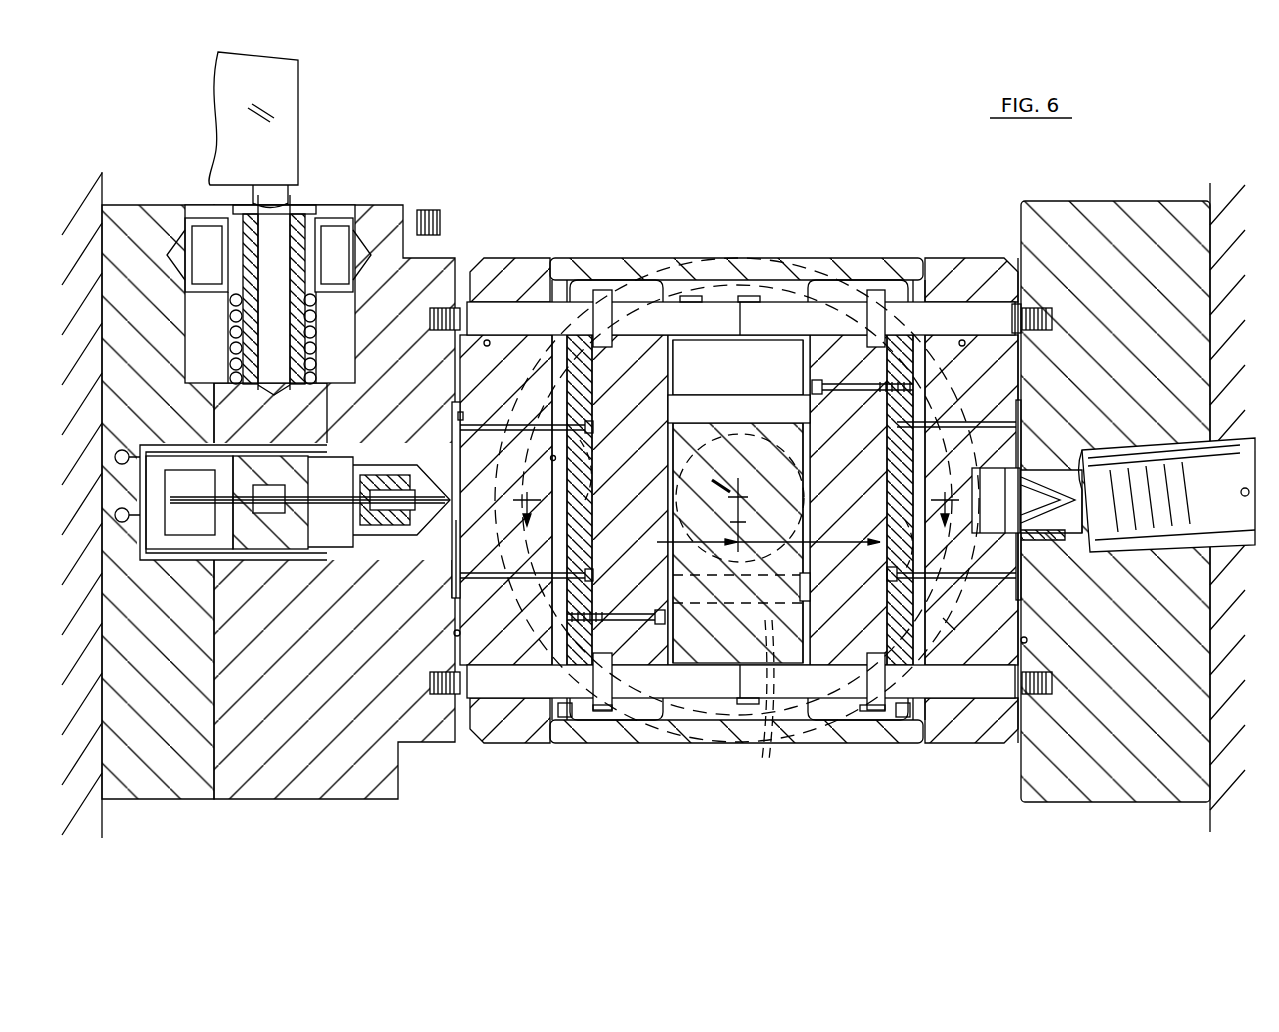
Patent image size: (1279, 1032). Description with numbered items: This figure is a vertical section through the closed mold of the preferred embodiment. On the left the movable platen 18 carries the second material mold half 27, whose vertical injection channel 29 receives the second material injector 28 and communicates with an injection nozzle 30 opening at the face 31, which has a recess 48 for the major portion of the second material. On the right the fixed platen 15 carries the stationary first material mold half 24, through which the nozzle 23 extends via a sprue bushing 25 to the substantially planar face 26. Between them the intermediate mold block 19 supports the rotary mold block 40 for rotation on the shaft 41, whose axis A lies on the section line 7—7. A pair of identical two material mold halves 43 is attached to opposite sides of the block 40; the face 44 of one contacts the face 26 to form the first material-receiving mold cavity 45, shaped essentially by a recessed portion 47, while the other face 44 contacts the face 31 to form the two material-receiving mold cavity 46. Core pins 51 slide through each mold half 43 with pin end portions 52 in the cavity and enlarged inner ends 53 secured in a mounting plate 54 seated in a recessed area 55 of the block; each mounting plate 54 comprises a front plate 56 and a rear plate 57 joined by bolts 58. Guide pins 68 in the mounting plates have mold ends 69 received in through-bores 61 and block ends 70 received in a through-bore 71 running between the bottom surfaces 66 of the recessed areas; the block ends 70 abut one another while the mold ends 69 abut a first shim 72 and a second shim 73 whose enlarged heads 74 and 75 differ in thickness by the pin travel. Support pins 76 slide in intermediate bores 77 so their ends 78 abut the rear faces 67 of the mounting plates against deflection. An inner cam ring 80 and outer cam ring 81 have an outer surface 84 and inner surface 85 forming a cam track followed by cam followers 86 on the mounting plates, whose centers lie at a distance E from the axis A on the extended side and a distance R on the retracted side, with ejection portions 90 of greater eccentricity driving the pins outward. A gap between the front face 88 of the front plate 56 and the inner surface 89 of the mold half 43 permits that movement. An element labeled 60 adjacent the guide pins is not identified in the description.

The section line 7 is at (735, 509).
The fixed platen 15 is at (1225, 168).
The movable platen 18 is at (80, 822).
The intermediate mold block 19 is at (813, 240).
The nozzle 23 is at (1225, 545).
The first material mold half 24 is at (1120, 800).
The sprue bushing 25 is at (1055, 470).
The face of first material mold half 26 is at (1028, 641).
The second material mold half 27 is at (306, 801).
The second material injector 28 is at (292, 100).
The vertical injection channel 29 is at (268, 342).
The injection nozzle 30 is at (262, 552).
The face of second material mold half 31 is at (452, 633).
The rotary mold block 40 is at (714, 256).
The shaft 41 is at (592, 410).
The two material mold halves 43 is at (495, 268).
The face of two material mold half 44 is at (455, 655).
The first material-receiving mold cavity 45 is at (1022, 586).
The two material-receiving mold cavity 46 is at (450, 568).
The recessed portion 47 is at (460, 415).
The recess 48 is at (455, 416).
The core pins 51 is at (488, 432).
The pin end portions 52 is at (462, 575).
The inner ends 53 is at (888, 576).
The mounting plate 54 is at (655, 718).
The recessed area 55 is at (618, 722).
The front plate 56 is at (575, 712).
The rear plate 57 is at (602, 712).
The bolts 58 is at (830, 380).
The rail brackets 60 is at (603, 295).
The through-bore 61 is at (487, 346).
The bottom surfaces 66 is at (803, 494).
The rear faces 67 is at (728, 455).
The guide pins 68 is at (755, 300).
The mold end 69 is at (530, 300).
The block end 70 is at (657, 330).
The through-bore 71 is at (692, 296).
The first shim 72 is at (1022, 300).
The second shim 73 is at (458, 300).
The enlarged head 74 is at (1023, 330).
The enlarged head 75 is at (458, 330).
The support pins 76 is at (745, 395).
The intermediate bores 77 is at (718, 392).
The ends of support pins 78 is at (668, 406).
The inner cam ring 80 is at (742, 515).
The outer cam ring 81 is at (955, 630).
The outer surface of inner cam ring 84 is at (890, 410).
The inner surface of outer cam ring 85 is at (888, 455).
The cam follower 86 is at (588, 480).
The front face of front plate 88 is at (560, 535).
The inner surface 89 is at (550, 459).
The cam track ejection portions 90 is at (769, 700).
The axis A is at (714, 478).
The distance R is at (757, 543).
The distance E is at (830, 541).